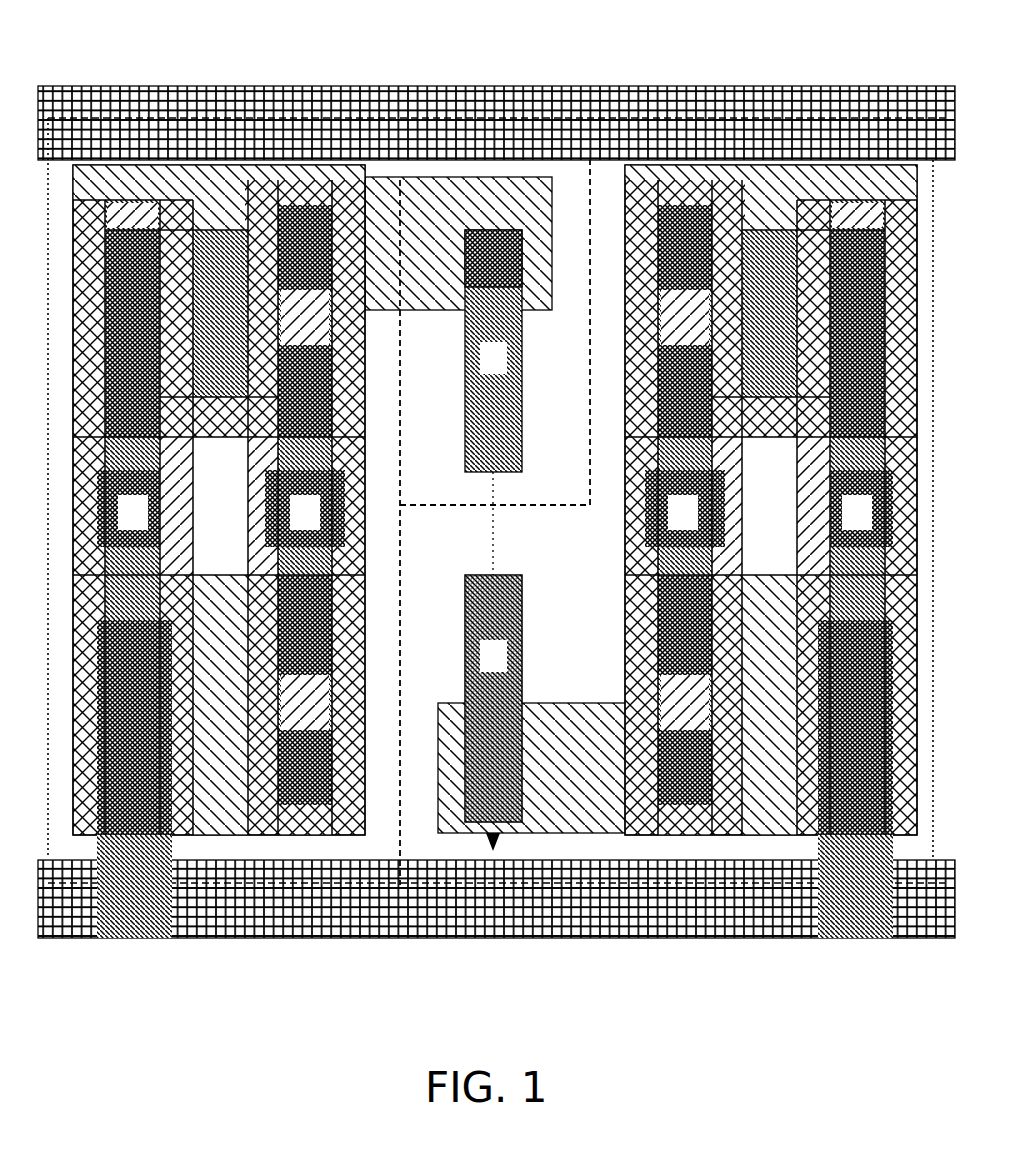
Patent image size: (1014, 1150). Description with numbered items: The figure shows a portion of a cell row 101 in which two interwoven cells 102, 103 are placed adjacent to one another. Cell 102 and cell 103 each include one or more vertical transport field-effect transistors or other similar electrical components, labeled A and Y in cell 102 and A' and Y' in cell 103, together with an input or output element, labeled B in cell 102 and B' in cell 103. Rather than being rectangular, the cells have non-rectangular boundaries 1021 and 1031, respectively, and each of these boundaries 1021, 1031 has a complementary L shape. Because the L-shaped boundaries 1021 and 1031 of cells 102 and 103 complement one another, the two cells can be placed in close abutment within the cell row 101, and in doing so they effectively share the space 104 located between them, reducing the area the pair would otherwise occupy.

The cell row 101 is at (98, 80).
The cell 102 is at (205, 150).
The non-rectangular boundary 1021 is at (568, 176).
The cell 103 is at (758, 190).
The non-rectangular boundary 1031 is at (610, 215).
The shared space 104 is at (405, 948).